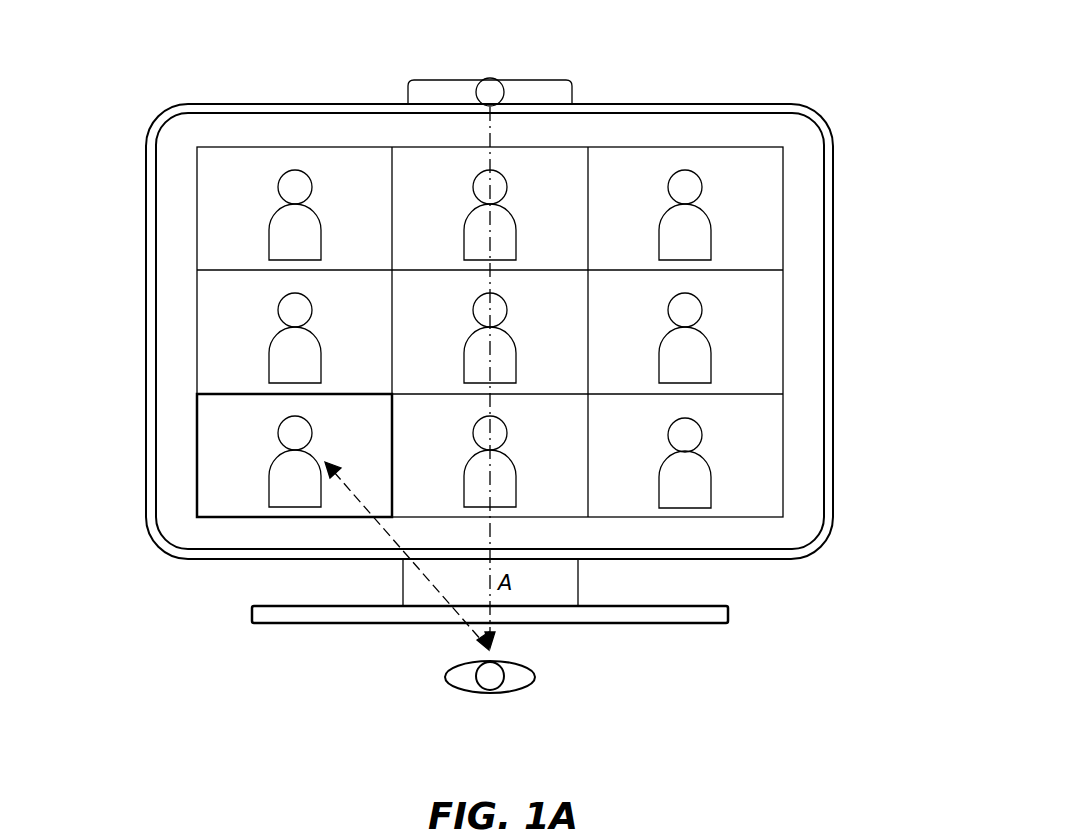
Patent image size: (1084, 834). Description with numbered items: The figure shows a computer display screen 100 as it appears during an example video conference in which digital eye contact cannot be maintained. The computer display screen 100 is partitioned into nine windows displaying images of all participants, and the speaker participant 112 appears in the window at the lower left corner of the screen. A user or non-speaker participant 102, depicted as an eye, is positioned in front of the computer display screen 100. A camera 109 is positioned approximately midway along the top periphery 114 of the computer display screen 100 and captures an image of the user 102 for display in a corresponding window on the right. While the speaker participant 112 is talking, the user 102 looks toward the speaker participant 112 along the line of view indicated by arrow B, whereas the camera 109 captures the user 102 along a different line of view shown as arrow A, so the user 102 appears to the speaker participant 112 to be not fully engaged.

The computer display screen 100 is at (833, 100).
The non-speaker participant/user 102 is at (508, 720).
The camera 109 is at (493, 56).
The speaker participant 112 is at (278, 439).
The top periphery 114 is at (322, 104).